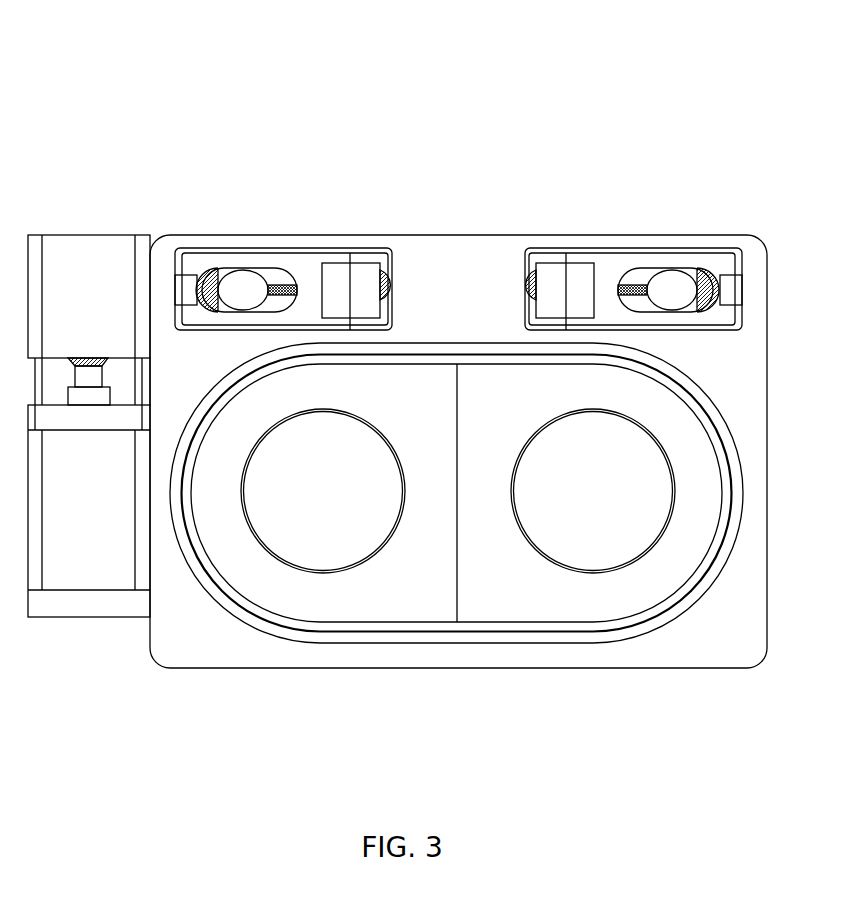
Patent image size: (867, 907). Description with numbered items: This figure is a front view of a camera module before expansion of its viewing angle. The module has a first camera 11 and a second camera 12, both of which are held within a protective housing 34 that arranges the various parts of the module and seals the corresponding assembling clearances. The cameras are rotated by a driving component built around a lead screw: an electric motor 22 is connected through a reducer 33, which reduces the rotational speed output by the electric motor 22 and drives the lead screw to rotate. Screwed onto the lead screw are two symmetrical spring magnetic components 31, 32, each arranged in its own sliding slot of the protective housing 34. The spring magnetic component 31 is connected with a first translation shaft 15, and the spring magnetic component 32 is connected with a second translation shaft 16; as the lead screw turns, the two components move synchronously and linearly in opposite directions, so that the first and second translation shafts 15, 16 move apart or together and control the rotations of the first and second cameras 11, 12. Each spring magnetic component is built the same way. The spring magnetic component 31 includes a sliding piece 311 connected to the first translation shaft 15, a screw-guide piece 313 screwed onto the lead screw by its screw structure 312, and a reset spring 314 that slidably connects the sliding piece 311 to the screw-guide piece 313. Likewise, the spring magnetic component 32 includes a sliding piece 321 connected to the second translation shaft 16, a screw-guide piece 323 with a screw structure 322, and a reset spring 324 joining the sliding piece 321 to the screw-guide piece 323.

The first camera 11 is at (306, 598).
The second camera 12 is at (605, 598).
The first translation shaft 15 is at (190, 287).
The second translation shaft 16 is at (723, 283).
The electric motor 22 is at (92, 525).
The spring magnetic component 31 is at (283, 172).
The sliding piece 311 is at (229, 262).
The screw structure 312 is at (370, 283).
The screw-guide piece 313 is at (332, 283).
The reset spring 314 is at (280, 285).
The spring magnetic component 32 is at (632, 172).
The sliding piece 321 is at (680, 262).
The screw structure 322 is at (543, 283).
The screw-guide piece 323 is at (585, 283).
The reset spring 324 is at (636, 285).
The reducer 33 is at (92, 302).
The protective housing 34 is at (463, 290).